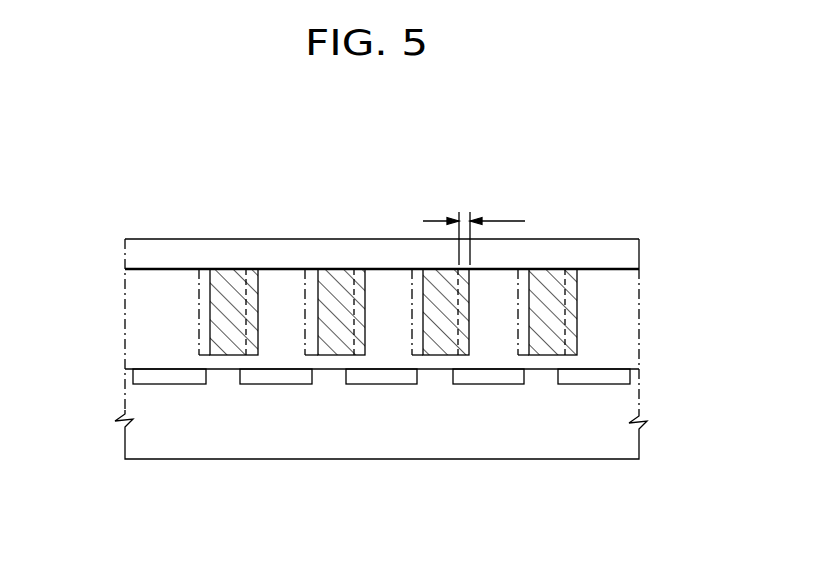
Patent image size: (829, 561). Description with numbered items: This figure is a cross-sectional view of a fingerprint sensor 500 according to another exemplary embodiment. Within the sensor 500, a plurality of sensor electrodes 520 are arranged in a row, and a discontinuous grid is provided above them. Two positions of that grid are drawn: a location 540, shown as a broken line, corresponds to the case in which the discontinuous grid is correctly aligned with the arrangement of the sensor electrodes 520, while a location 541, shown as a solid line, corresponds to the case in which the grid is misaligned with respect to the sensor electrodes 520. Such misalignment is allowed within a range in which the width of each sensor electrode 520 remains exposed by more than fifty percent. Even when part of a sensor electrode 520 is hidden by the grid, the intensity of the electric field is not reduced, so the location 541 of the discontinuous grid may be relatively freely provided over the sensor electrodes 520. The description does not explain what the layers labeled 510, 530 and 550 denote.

The fingerprint sensor 500 is at (391, 317).
The substrate 510 is at (640, 425).
The sensor electrodes 520 is at (580, 377).
The insulating layer 530 is at (630, 308).
The location of the discontinuous grid 540 is at (388, 272).
The location of the discontinuous grid 541 is at (357, 288).
The upper layer 550 is at (630, 258).